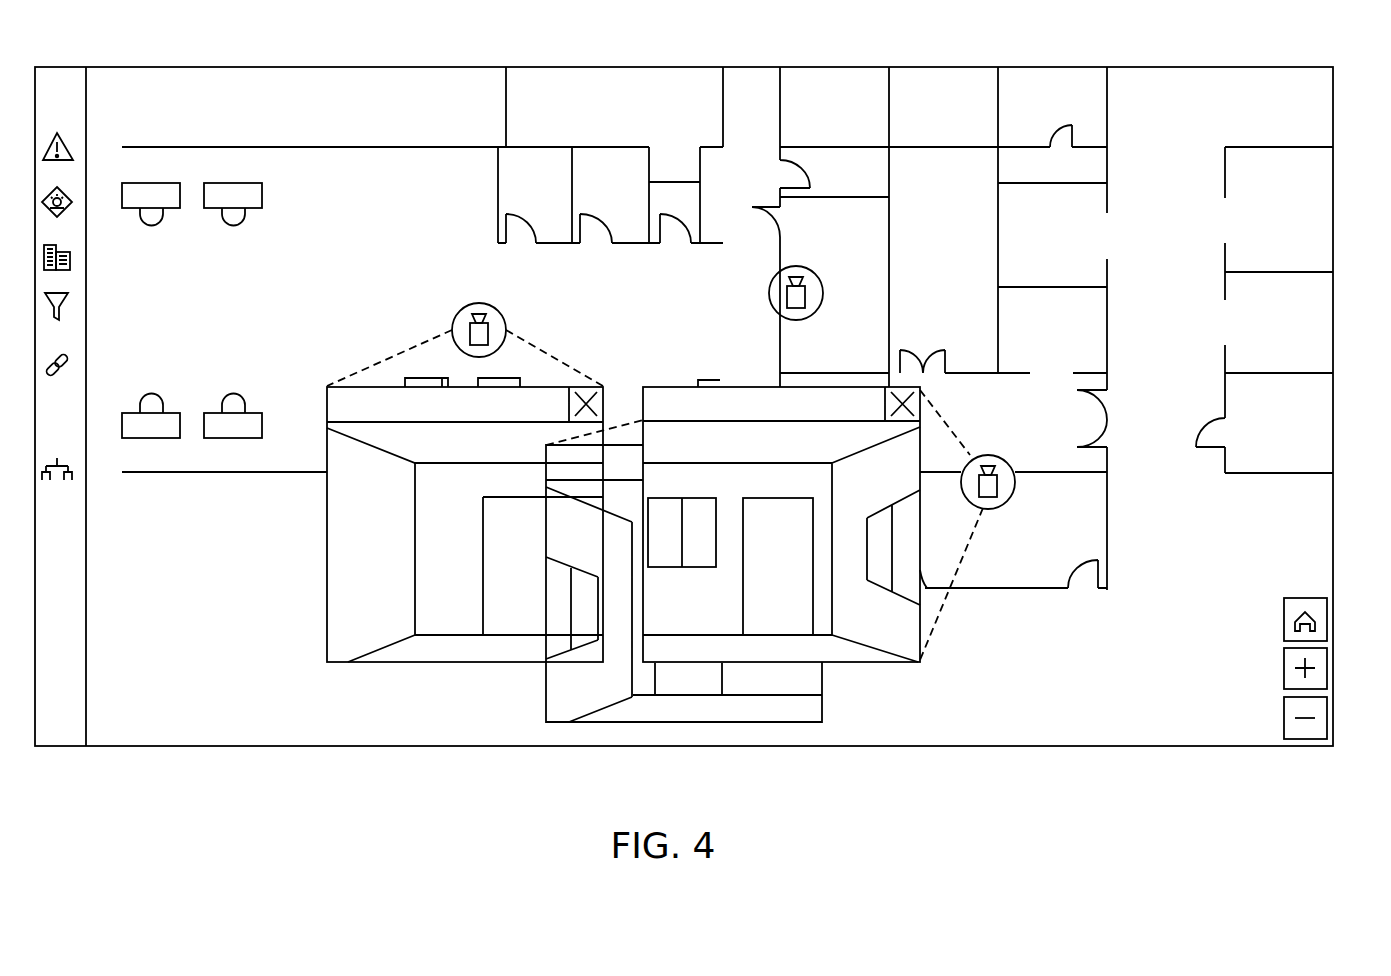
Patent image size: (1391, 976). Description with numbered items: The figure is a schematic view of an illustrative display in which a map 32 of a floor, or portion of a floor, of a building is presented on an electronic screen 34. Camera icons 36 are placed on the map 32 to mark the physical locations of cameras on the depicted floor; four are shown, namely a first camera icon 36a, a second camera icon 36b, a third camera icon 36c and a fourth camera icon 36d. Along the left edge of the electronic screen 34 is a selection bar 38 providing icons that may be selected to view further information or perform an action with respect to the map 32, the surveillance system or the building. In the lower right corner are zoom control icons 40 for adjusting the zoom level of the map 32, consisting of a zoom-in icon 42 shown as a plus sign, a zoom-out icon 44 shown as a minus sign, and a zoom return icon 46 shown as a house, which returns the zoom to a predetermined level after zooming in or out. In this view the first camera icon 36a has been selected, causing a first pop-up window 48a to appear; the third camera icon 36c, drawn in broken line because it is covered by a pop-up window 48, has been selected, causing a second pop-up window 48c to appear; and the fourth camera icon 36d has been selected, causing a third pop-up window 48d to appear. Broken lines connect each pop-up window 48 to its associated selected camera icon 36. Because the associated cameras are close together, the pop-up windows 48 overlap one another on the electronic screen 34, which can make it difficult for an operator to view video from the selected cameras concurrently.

The map 32 is at (1183, 97).
The electronic screen 34 is at (1277, 67).
The camera icon 36 is at (697, 441).
The first camera icon 36a is at (474, 304).
The second camera icon 36b is at (799, 266).
The third camera icon 36c is at (625, 422).
The fourth camera icon 36d is at (1007, 462).
The selection bar 38 is at (60, 78).
The zoom control icons 40 is at (1202, 708).
The zoom-in icon 42 is at (1327, 668).
The zoom-out icon 44 is at (1327, 718).
The zoom return icon 46 is at (1327, 620).
The pop-up window 48 is at (609, 561).
The first pop-up window 48a is at (327, 593).
The second pop-up window 48c is at (546, 693).
The third pop-up window 48d is at (920, 662).